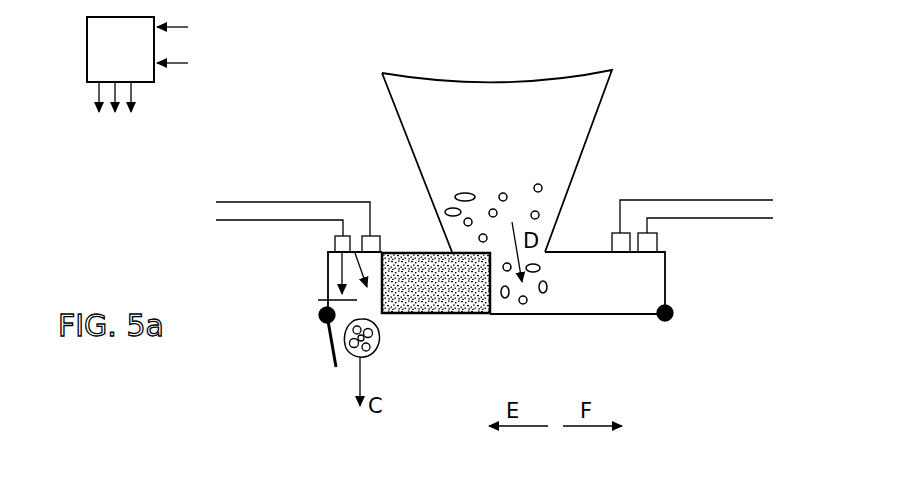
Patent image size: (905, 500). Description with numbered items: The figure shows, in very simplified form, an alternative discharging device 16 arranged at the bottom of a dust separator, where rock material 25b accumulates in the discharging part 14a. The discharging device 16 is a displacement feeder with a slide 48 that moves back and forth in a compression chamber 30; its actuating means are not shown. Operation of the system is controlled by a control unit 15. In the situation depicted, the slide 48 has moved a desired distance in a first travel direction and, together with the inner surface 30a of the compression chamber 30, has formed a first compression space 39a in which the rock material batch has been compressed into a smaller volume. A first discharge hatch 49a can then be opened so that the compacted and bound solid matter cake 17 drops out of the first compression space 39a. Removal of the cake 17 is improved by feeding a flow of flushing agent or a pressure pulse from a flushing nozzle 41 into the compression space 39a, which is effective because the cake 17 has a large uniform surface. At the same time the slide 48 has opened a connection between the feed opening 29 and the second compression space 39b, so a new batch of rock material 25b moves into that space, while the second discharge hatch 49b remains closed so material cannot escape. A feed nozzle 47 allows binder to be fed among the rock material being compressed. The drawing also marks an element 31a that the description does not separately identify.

The control unit 15 is at (136, 60).
The discharging part 14a is at (587, 143).
The feed opening 29 is at (500, 244).
The rock material 25b is at (531, 183).
The feed nozzle 47 is at (380, 234).
The flushing nozzle 41 is at (333, 242).
The discharging device 16 is at (737, 292).
The compression chamber 30 is at (559, 327).
The inner surface of the compression chamber 30a is at (562, 253).
The slide 48 is at (452, 295).
The first compression space 39a is at (318, 301).
The second compression space 39b is at (648, 278).
The first discharge hatch 49a is at (330, 350).
The second discharge hatch 49b is at (635, 316).
The outlet edge 31a is at (378, 313).
The cake 17 is at (378, 357).